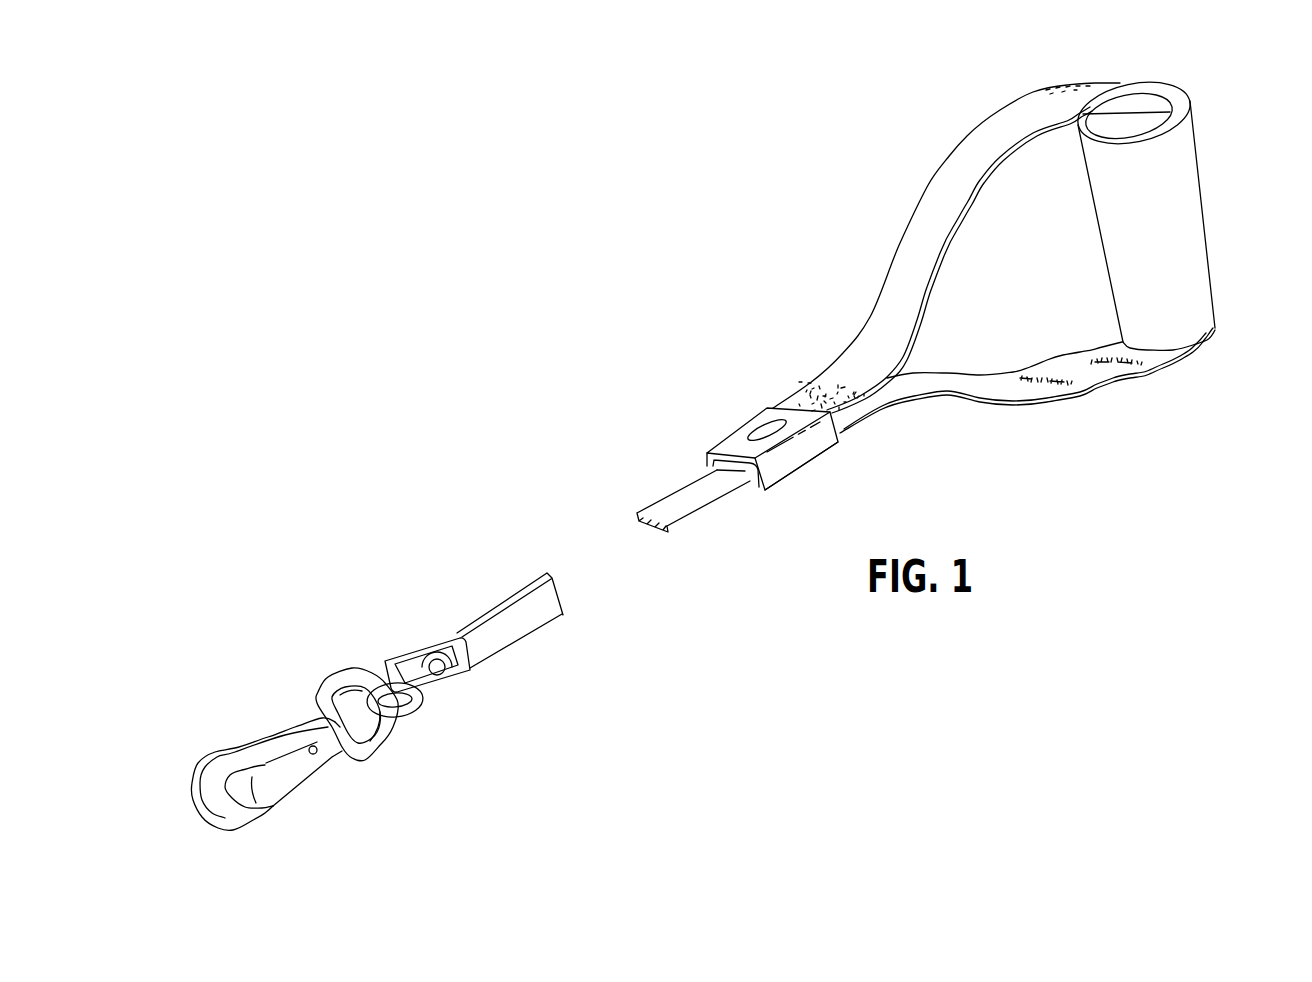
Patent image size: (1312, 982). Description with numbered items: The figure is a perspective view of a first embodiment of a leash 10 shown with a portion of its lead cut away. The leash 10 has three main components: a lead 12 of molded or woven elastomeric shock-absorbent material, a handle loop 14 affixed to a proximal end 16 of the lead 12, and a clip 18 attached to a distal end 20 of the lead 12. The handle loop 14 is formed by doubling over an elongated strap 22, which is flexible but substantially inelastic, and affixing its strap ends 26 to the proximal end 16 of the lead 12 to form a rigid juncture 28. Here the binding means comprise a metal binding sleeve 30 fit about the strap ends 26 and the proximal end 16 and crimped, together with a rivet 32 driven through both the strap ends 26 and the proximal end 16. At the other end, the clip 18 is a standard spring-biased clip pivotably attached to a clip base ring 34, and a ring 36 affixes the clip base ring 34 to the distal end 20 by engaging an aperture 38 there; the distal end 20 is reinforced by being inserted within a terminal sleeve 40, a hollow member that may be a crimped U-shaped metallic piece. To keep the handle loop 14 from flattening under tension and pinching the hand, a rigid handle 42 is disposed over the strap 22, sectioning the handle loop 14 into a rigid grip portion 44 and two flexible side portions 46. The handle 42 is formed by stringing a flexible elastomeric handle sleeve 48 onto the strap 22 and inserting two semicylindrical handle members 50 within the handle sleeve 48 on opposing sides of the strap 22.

The leash 10 is at (611, 470).
The lead 12 is at (693, 500).
The handle loop 14 is at (1013, 397).
The proximal end 16 is at (687, 480).
The clip 18 is at (267, 740).
The distal end 20 is at (473, 667).
The strap 22 is at (957, 244).
The strap ends 26 is at (730, 465).
The rigid juncture 28 is at (795, 449).
The binding sleeve 30 is at (820, 440).
The rivet 32 is at (768, 420).
The clip base ring 34 is at (370, 742).
The ring 36 is at (412, 712).
The aperture 38 is at (438, 663).
The terminal sleeve 40 is at (400, 660).
The handle 42 is at (1175, 194).
The rigid grip portion 44 is at (1175, 194).
The flexible side portions 46 is at (1008, 113).
The handle sleeve 48 is at (1173, 194).
The handle members 50 is at (1120, 120).